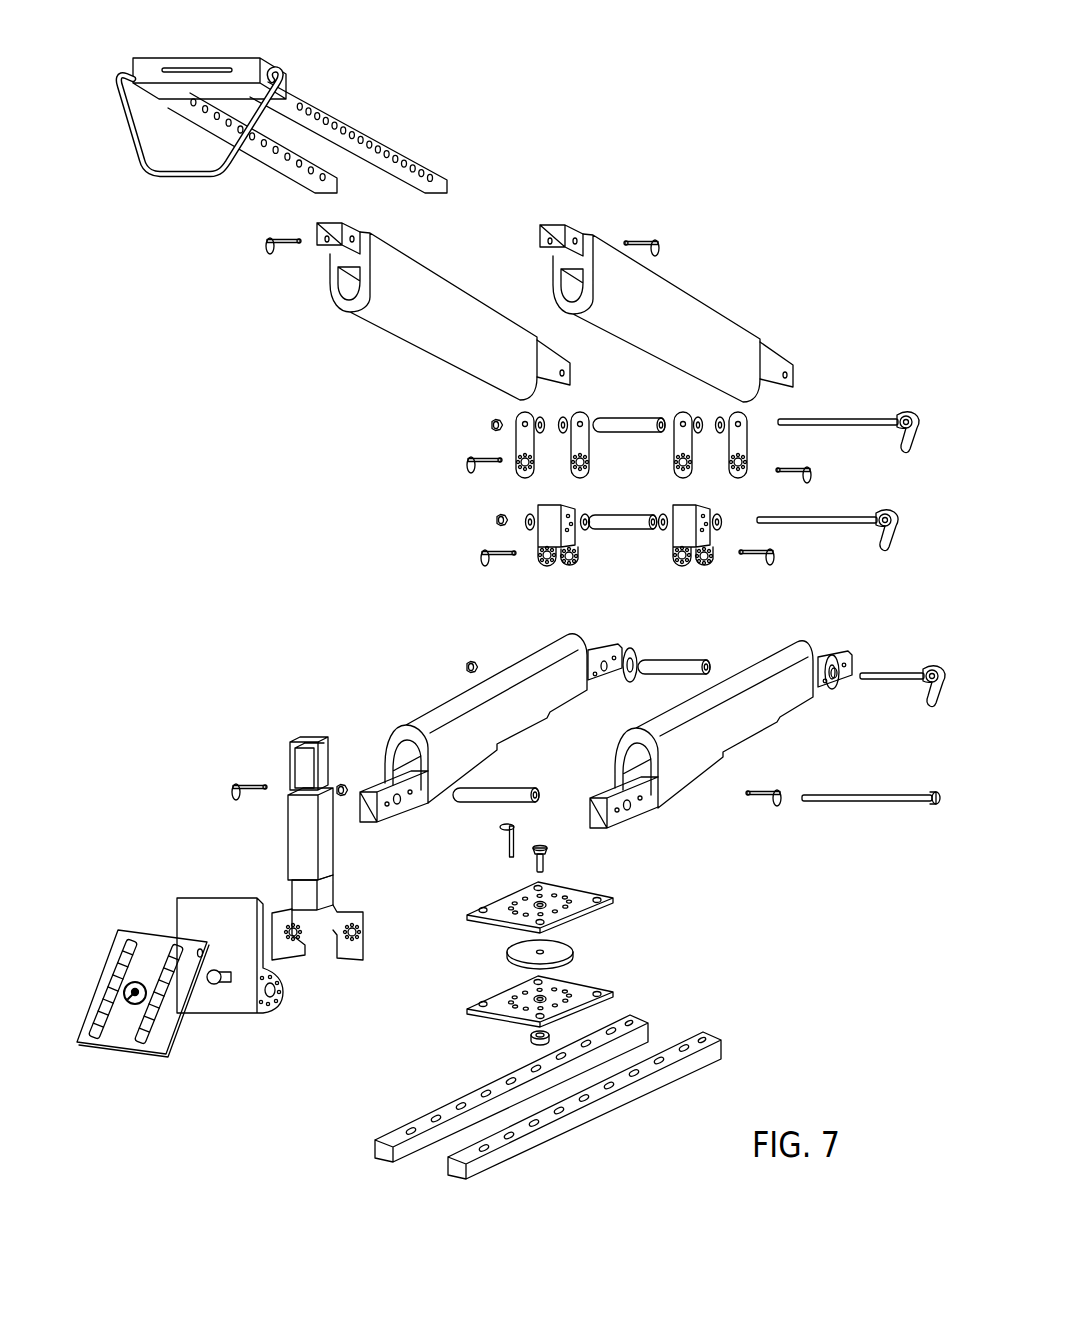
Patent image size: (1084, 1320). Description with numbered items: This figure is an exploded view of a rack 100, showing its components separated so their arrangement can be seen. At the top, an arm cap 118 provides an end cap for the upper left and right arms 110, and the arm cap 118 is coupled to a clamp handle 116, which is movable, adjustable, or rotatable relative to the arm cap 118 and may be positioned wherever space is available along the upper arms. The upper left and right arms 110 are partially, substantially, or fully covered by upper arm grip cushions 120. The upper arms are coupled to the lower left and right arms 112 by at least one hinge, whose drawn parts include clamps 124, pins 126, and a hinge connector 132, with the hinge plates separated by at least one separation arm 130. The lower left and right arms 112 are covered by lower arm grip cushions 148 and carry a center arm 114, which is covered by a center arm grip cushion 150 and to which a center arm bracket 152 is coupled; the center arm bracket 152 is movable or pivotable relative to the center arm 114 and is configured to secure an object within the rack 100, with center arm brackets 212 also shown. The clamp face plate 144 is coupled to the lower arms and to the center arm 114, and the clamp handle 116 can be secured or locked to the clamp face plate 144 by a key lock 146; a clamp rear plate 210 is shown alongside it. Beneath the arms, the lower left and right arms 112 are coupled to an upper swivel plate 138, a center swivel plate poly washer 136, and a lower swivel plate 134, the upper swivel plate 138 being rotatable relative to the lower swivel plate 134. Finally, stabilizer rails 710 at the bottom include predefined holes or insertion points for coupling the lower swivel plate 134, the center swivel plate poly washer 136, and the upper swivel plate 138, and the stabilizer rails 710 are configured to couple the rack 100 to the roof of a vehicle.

The rack 100 is at (739, 136).
The upper left and right arms 110 is at (352, 232).
The lower left and right arms 112 is at (385, 811).
The center arm 114 is at (300, 891).
The clamp handle 116 is at (176, 178).
The arm cap 118 is at (243, 62).
The upper arm grip cushions 120 is at (454, 303).
The clamps 124 is at (876, 422).
The pins 126 is at (480, 552).
The separation arm 130 is at (620, 420).
The hinge connector 132 is at (540, 540).
The lower swivel plate 134 is at (583, 985).
The center swivel plate poly washer 136 is at (560, 945).
The upper swivel plate 138 is at (583, 892).
The clamp face plate 144 is at (150, 951).
The key lock 146 is at (132, 998).
The lower arm grip cushions 148 is at (451, 703).
The center arm grip cushion 150 is at (322, 833).
The center arm bracket 152 is at (307, 738).
The clamp rear plate 210 is at (195, 907).
The center arm brackets 212 is at (280, 947).
The stabilizer rails 710 is at (713, 1052).